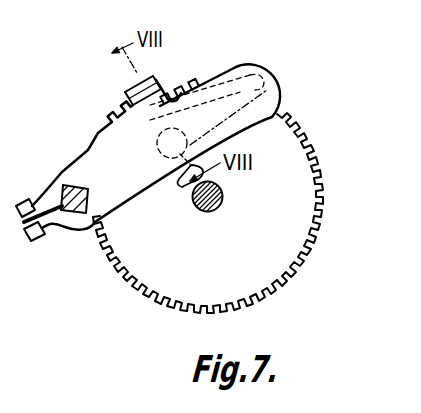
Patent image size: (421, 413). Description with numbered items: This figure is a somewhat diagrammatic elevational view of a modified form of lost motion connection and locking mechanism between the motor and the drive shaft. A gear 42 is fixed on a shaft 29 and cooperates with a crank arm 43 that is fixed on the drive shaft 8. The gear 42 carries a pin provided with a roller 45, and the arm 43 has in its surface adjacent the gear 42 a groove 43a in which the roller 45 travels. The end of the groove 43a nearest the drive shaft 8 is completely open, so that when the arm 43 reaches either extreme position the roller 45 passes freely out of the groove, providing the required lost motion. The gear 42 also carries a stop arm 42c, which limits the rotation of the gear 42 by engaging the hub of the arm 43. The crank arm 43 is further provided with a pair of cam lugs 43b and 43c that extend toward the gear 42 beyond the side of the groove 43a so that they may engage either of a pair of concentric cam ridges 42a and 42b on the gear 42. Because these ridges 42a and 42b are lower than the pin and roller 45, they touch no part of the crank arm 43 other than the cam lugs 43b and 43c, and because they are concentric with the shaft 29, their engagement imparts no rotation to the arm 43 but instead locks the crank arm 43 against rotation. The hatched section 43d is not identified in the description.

The gear 42 is at (320, 164).
The cam ridge 42a is at (222, 92).
The cam ridge 42b is at (181, 180).
The stop arm 42c is at (125, 95).
The crank arm 43 is at (92, 164).
The groove 43a is at (268, 92).
The cam lug 43b is at (180, 77).
The cam lug 43c is at (125, 90).
The hatched pin 43d is at (88, 230).
The roller 45 is at (158, 150).
The shaft 29 is at (222, 206).
The drive shaft 8 is at (70, 214).